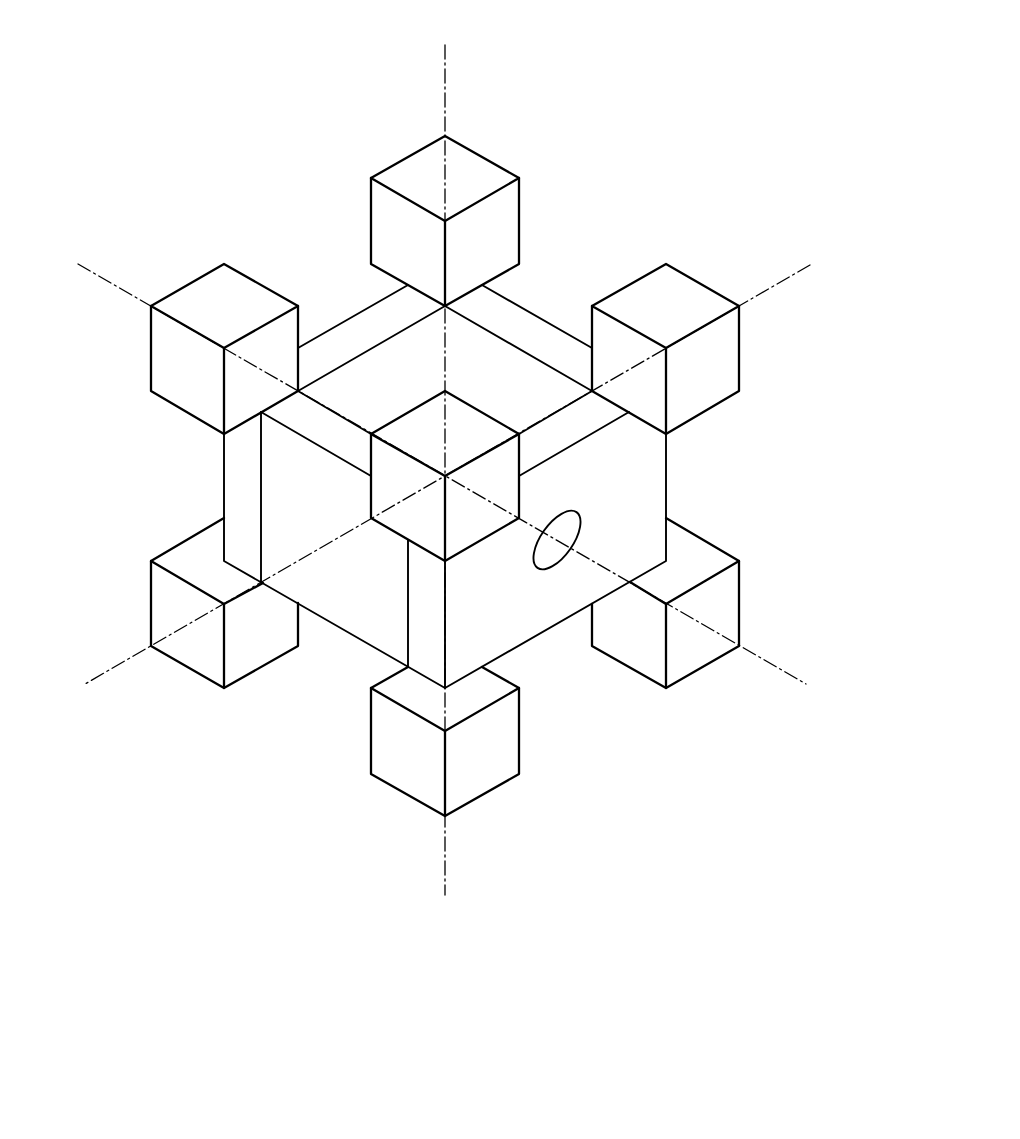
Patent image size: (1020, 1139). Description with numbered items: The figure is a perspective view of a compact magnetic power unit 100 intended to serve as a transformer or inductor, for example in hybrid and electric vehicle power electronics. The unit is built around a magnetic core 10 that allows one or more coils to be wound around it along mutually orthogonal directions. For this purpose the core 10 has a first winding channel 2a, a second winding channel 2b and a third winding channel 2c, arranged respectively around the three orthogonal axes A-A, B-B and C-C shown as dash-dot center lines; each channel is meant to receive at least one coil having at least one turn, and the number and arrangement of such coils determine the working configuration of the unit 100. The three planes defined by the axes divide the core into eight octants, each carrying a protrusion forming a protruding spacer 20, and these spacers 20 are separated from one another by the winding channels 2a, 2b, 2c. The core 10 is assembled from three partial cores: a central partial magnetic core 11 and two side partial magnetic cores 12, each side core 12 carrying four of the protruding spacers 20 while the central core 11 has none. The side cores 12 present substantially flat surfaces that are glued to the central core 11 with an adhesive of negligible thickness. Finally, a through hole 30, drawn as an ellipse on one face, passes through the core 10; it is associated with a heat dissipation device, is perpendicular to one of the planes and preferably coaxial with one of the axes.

The magnetic power unit 100 is at (657, 102).
The magnetic core 10 is at (228, 724).
The central partial magnetic core 11 is at (513, 333).
The side partial magnetic core 12 is at (357, 336).
The protruding spacer 20 is at (468, 166).
The first winding channel 2a is at (356, 597).
The second winding channel 2b is at (530, 604).
The third winding channel 2c is at (242, 486).
The through hole 30 is at (568, 532).